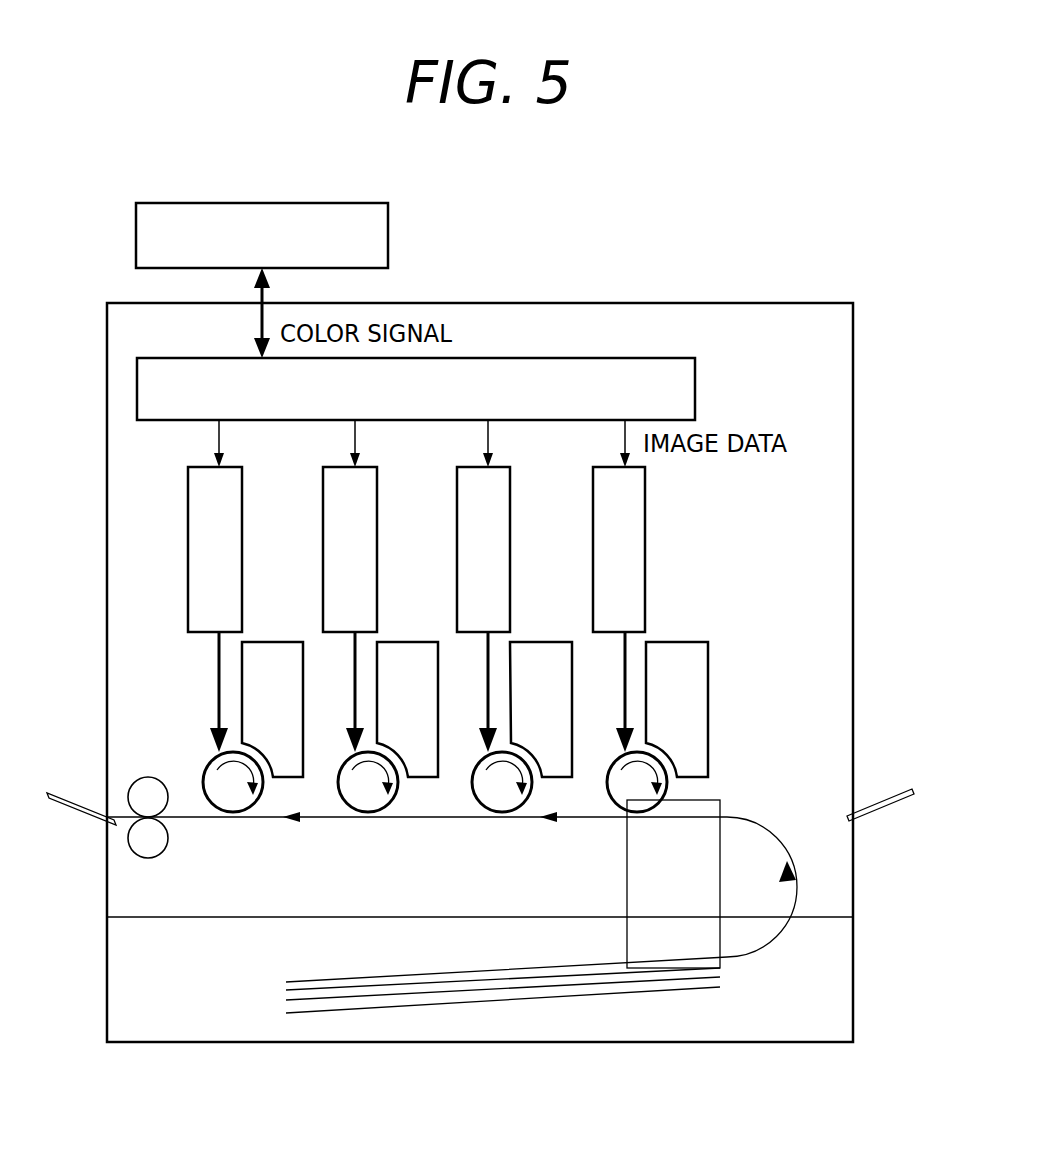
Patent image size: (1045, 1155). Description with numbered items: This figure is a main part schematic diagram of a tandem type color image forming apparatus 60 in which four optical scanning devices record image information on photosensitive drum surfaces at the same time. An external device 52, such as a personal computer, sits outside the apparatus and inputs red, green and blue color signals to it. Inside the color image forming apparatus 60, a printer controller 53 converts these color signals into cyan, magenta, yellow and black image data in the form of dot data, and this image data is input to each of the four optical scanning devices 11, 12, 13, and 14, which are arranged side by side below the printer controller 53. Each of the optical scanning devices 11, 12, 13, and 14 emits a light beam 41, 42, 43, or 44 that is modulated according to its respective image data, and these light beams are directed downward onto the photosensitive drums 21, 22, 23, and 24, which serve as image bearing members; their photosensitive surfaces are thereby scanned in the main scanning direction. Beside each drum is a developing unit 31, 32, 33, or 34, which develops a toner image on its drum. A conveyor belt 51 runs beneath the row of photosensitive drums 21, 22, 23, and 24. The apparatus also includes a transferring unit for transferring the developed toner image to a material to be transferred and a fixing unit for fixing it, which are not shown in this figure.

The optical scanning device 11 is at (208, 527).
The optical scanning device 12 is at (343, 527).
The optical scanning device 13 is at (477, 527).
The optical scanning device 14 is at (612, 527).
The photosensitive drum 21 is at (233, 800).
The photosensitive drum 22 is at (368, 800).
The photosensitive drum 23 is at (502, 800).
The photosensitive drum 24 is at (641, 798).
The developing unit 31 is at (275, 657).
The developing unit 32 is at (410, 657).
The developing unit 33 is at (546, 657).
The developing unit 34 is at (680, 657).
The light beam 41 is at (207, 692).
The light beam 42 is at (342, 692).
The light beam 43 is at (476, 692).
The light beam 44 is at (612, 692).
The conveyor belt 51 is at (771, 815).
The external device 52 is at (388, 231).
The printer controller 53 is at (695, 385).
The color image forming apparatus 60 is at (743, 303).